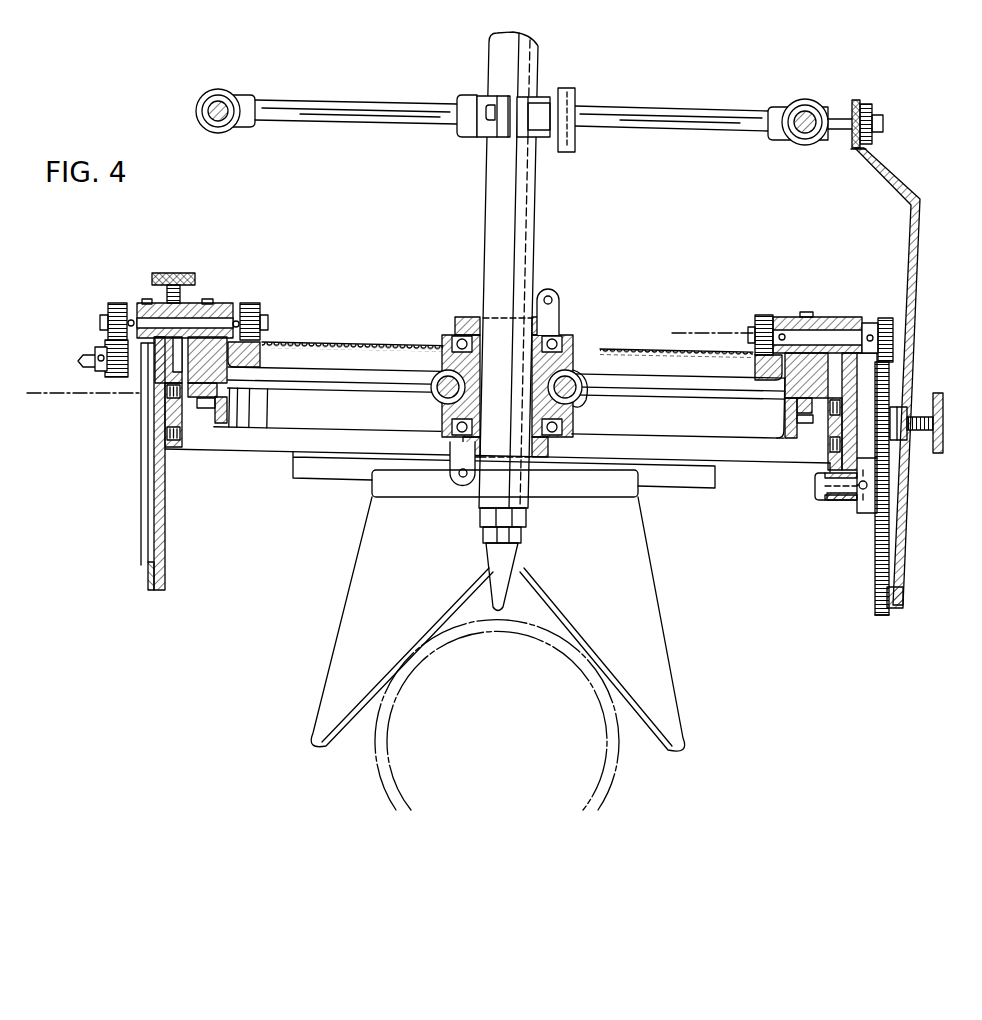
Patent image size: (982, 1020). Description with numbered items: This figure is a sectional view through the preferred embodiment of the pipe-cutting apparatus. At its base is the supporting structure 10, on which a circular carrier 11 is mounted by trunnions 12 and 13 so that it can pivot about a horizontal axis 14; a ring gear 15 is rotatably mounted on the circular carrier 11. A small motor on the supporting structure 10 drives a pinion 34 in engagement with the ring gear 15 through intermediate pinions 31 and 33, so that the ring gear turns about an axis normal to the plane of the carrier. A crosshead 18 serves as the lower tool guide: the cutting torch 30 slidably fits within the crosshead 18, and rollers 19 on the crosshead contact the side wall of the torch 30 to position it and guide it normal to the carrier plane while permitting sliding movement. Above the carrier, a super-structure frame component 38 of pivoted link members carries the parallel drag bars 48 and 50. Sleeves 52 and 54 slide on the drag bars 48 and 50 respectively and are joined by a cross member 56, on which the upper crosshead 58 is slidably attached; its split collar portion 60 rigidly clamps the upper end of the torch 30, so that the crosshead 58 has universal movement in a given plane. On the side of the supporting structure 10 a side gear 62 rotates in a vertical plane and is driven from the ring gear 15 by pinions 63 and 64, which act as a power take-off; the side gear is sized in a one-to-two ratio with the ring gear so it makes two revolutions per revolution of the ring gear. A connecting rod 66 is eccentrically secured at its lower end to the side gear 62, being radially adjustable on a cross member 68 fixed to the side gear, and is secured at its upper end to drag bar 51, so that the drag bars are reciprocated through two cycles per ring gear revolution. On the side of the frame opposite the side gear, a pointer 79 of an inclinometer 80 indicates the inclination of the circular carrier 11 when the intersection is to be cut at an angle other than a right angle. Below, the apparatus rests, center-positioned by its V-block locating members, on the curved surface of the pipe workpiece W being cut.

The supporting structure 10 is at (792, 463).
The circular carrier 11 is at (743, 440).
The trunnion 12 is at (219, 303).
The trunnion 13 is at (790, 316).
The horizontal axis 14 is at (688, 333).
The ring gear 15 is at (326, 343).
The crosshead 18 is at (581, 402).
The roller 19 is at (560, 292).
The cutting torch 30 is at (534, 258).
The intermediate pinion 31 is at (113, 378).
The intermediate pinion 33 is at (111, 303).
The pinion 34 is at (257, 305).
The super-structure frame component 38 is at (866, 100).
The drag bar 48 is at (224, 106).
The drag bar 50 is at (805, 112).
The drag bar 51 is at (855, 151).
The sleeve 52 is at (229, 128).
The sleeve 54 is at (813, 146).
The cross member 56 is at (672, 110).
The crosshead 58 is at (462, 136).
The split collar portion 60 is at (502, 140).
The side gear 62 is at (883, 617).
The pinion 63 is at (763, 315).
The pinion 64 is at (886, 318).
The connecting rod 66 is at (920, 232).
The cross member 68 is at (903, 540).
The pointer 79 is at (141, 508).
The inclinometer 80 is at (160, 563).
The pipe workpiece W is at (614, 781).